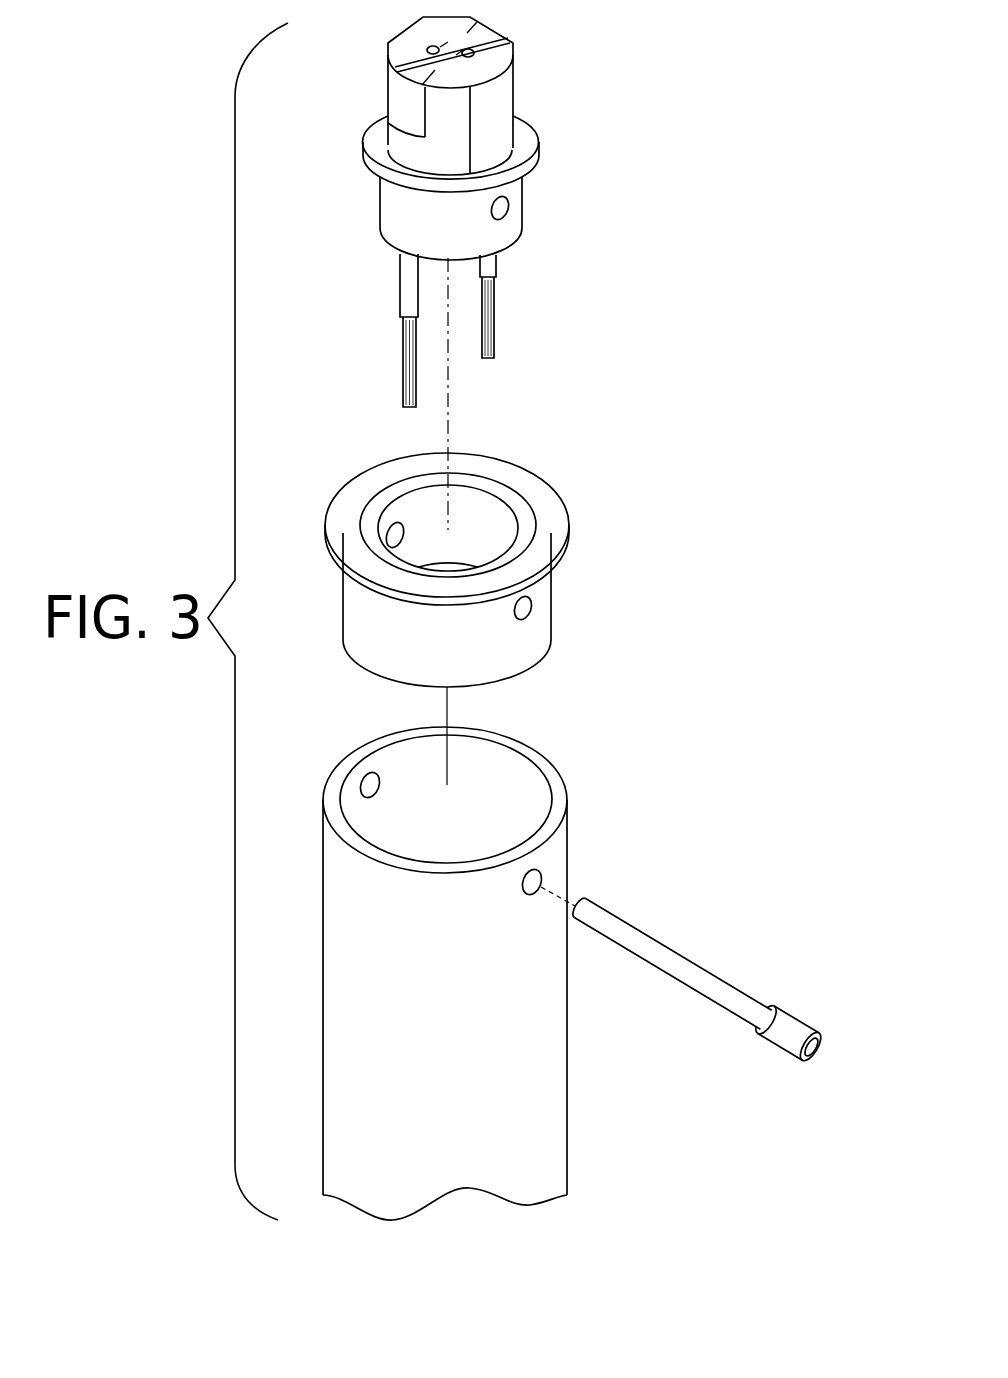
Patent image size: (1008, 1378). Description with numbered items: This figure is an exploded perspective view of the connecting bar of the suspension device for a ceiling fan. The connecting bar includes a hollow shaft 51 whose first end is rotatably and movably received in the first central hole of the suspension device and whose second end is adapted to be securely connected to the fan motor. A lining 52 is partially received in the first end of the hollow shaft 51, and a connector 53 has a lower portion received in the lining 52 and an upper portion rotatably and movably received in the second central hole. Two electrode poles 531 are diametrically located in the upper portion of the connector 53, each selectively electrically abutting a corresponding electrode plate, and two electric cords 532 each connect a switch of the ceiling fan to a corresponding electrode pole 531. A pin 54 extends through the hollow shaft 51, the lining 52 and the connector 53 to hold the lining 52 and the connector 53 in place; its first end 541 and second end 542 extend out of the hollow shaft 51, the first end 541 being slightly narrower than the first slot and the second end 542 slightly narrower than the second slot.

The hollow shaft 51 is at (553, 1055).
The lining 52 is at (552, 510).
The connector 53 is at (537, 166).
The electrode poles 531 is at (386, 103).
The electric cords 532 is at (499, 259).
The pin 54 is at (710, 914).
The first end of the pin 541 is at (788, 1015).
The second end of the pin 542 is at (577, 903).